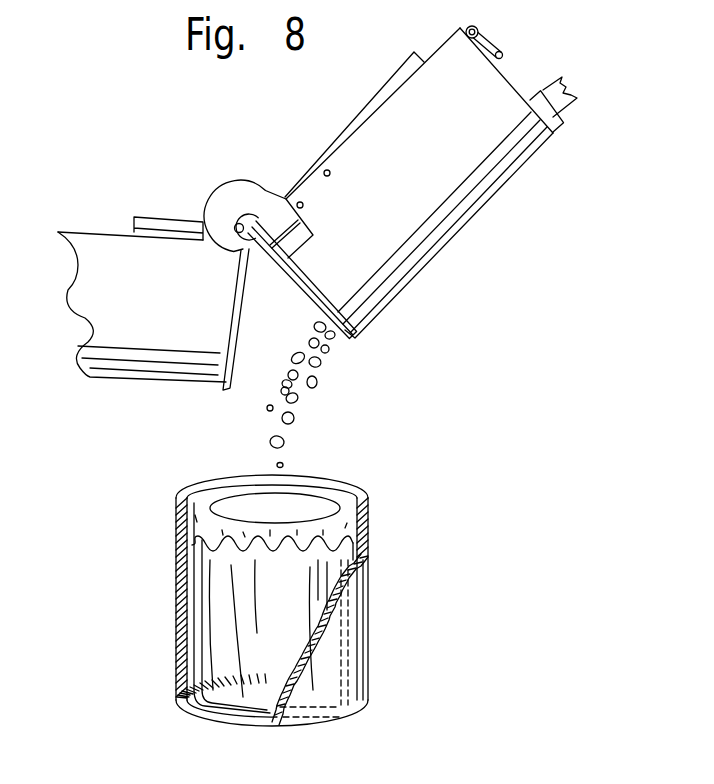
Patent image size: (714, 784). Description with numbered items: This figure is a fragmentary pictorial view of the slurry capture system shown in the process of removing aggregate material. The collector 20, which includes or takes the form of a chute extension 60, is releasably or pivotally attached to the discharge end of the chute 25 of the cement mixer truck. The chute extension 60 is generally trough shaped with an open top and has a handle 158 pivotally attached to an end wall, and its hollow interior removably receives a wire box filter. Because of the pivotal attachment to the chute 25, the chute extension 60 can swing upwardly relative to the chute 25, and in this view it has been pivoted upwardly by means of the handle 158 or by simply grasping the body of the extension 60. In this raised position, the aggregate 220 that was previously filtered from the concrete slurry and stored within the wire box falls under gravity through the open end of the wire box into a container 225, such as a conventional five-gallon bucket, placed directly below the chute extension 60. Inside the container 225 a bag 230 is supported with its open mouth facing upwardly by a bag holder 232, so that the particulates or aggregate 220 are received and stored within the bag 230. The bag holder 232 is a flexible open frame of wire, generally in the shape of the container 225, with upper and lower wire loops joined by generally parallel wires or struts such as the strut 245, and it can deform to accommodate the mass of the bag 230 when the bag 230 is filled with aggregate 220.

The collector 20 is at (390, 208).
The chute 25 is at (90, 242).
The chute extension 60 is at (397, 228).
The handle 158 is at (490, 41).
The aggregate 220 is at (314, 408).
The container 225 is at (365, 517).
The bag 230 is at (286, 601).
The bag holder 232 is at (195, 652).
The strut 245 is at (200, 633).